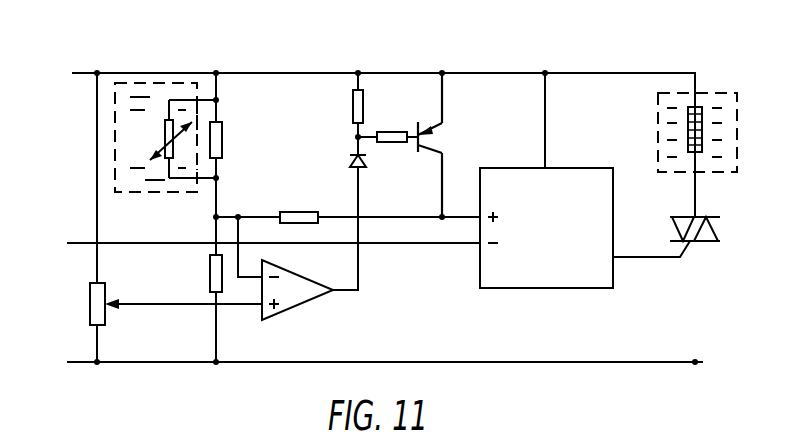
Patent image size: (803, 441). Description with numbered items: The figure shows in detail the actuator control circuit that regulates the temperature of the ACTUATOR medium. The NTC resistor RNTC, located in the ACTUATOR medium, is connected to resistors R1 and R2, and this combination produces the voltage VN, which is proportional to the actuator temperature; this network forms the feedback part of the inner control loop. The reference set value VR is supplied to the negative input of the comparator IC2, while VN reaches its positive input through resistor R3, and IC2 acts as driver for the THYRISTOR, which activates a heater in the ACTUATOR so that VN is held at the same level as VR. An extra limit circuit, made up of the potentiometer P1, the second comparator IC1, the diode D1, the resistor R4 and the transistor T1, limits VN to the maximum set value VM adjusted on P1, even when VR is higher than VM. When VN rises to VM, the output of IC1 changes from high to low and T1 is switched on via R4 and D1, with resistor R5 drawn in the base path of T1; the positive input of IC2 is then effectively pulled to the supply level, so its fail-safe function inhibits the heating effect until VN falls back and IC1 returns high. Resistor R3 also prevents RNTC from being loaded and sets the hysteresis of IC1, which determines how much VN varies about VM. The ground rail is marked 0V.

The NTC resistor RNTC is at (167, 137).
The resistor R1 is at (232, 140).
The resistor R2 is at (201, 273).
The resistor R3 is at (299, 206).
The resistor R4 is at (341, 114).
The resistor R5 is at (388, 124).
The diode D1 is at (343, 164).
The transistor T1 is at (444, 145).
The comparator IC1 is at (310, 249).
The comparator IC2 is at (585, 228).
The potentiometer P1 is at (92, 304).
The maximum set value VM is at (187, 291).
The voltage equivalent of actuator temperature VN is at (346, 233).
The reference set value VR is at (54, 243).
The ground 0V is at (722, 359).
The thyristor THYRISTOR is at (690, 248).
The actuator ACTUATOR is at (650, 105).